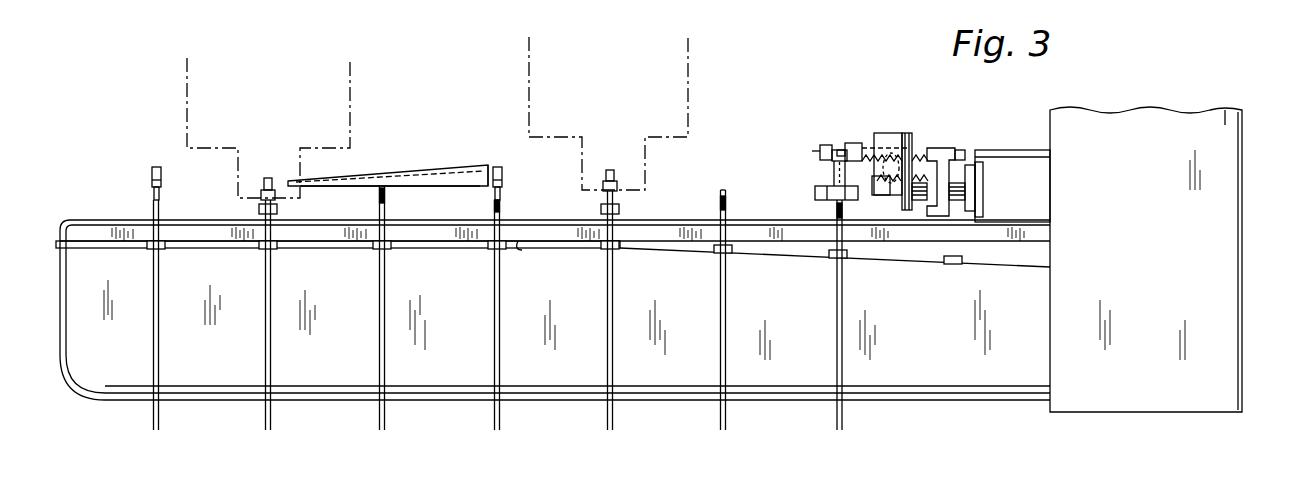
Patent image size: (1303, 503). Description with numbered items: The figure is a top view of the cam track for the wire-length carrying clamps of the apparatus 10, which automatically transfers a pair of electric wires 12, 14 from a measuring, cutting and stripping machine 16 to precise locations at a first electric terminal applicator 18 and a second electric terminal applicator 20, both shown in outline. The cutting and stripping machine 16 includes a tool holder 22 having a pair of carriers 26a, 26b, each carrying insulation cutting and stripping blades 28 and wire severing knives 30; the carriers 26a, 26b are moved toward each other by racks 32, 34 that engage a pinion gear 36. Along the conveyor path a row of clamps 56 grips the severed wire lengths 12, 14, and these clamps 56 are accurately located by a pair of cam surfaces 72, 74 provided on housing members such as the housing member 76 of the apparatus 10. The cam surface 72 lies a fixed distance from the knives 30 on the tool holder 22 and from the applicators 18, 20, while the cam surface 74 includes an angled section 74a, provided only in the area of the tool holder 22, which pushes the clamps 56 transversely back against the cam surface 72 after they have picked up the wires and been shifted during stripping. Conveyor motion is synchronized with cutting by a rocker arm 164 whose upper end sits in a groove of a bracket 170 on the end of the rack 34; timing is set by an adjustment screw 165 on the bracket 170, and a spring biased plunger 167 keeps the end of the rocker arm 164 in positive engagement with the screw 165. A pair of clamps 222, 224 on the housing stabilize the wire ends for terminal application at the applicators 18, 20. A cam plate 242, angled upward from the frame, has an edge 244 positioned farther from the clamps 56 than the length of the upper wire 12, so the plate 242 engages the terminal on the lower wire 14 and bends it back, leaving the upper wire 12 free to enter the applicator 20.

The apparatus 10 is at (473, 158).
The electric wire 12 is at (720, 213).
The electric wire 14 is at (727, 210).
The measuring, cutting and stripping machine 16 is at (1030, 130).
The first electric terminal applicator 18 is at (692, 88).
The second electric terminal applicator 20 is at (355, 106).
The tool holder 22 is at (945, 140).
The carrier 26a is at (950, 163).
The carrier 26b is at (965, 165).
The insulation cutting and stripping blades 28 is at (957, 187).
The wire severing knives 30 is at (975, 190).
The rack 32 is at (886, 186).
The rack 34 is at (915, 148).
The pinion gear 36 is at (878, 168).
The clamps 56 is at (390, 252).
The cam surface 72 is at (522, 241).
The cam surface 74 is at (563, 238).
The angled section 74a is at (900, 254).
The housing member 76 is at (352, 380).
The rocker arm 164 is at (838, 145).
The adjustment screw 165 is at (820, 152).
The spring biased plunger 167 is at (846, 145).
The bracket 170 is at (858, 147).
The clamp 222 is at (622, 208).
The clamp 224 is at (258, 200).
The cam plate 242 is at (415, 173).
The edge 244 is at (467, 186).